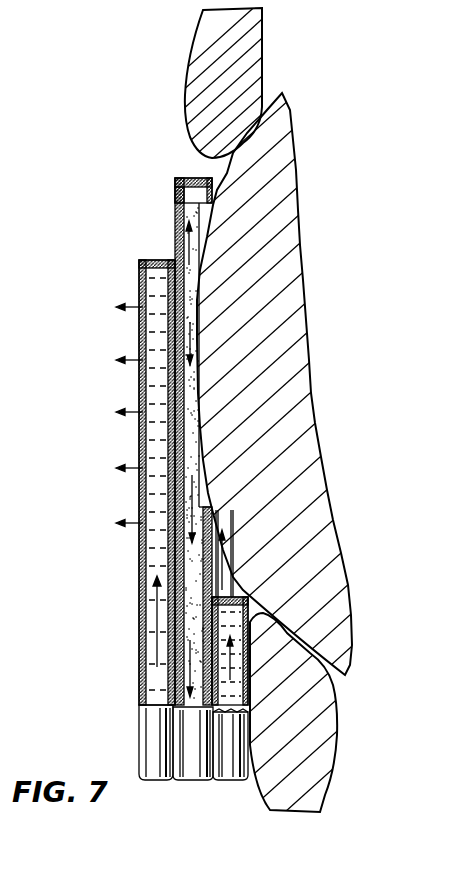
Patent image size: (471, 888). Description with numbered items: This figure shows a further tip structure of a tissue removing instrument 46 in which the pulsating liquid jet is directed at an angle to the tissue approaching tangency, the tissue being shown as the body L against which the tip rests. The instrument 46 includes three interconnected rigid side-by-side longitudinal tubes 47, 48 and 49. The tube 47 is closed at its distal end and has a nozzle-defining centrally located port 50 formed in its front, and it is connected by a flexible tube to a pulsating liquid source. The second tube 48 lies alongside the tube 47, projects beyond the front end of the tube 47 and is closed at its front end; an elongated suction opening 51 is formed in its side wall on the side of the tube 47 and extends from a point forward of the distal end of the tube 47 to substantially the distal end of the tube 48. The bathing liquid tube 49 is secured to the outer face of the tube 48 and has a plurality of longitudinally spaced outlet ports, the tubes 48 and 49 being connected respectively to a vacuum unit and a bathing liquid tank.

The lip / mold part L is at (283, 151).
The improved instrument 46 is at (133, 252).
The tube 47 is at (234, 774).
The second tube 48 is at (191, 774).
The bathing liquid tube 49 is at (147, 727).
The port 50 is at (228, 586).
The suction opening 51 is at (187, 194).